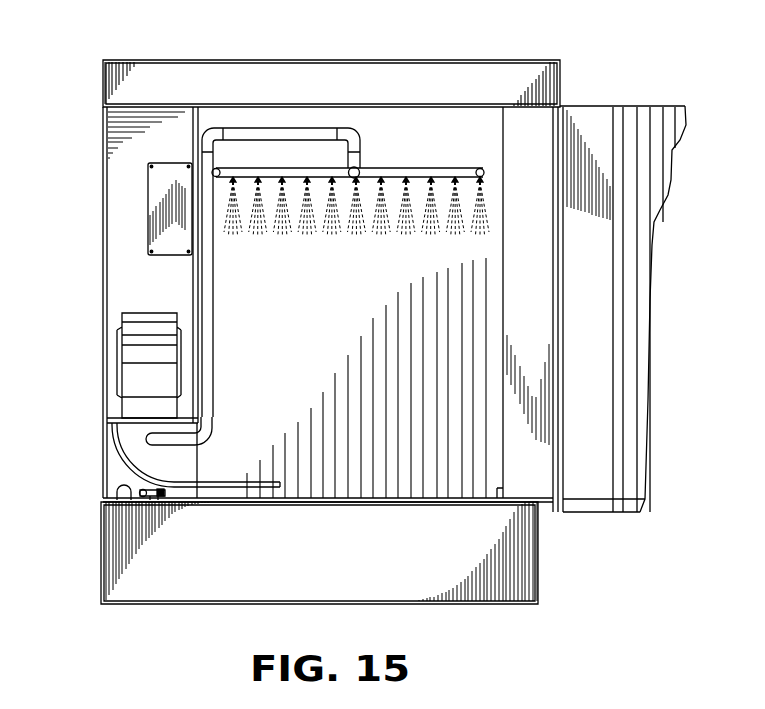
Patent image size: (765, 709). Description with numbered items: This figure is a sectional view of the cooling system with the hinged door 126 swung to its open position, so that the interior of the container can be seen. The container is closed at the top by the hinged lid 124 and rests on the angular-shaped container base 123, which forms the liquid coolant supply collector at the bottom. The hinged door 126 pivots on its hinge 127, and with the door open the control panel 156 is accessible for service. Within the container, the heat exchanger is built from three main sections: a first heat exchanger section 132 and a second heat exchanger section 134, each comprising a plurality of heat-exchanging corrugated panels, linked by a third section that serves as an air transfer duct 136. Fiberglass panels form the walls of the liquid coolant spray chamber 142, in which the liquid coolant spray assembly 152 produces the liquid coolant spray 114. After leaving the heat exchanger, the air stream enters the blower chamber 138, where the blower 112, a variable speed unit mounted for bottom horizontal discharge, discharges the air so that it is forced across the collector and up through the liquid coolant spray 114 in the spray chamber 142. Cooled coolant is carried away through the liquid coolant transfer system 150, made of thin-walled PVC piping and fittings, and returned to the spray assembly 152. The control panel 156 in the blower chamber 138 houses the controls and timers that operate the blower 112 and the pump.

The blower 112 is at (142, 383).
The liquid coolant spray 114 is at (438, 200).
The container base 123 is at (101, 553).
The hinged lid 124 is at (560, 78).
The hinged door 126 is at (600, 527).
The hinge 127 is at (563, 347).
The first heat exchanger section 132 is at (630, 235).
The second heat exchanger section 134 is at (450, 397).
The air transfer duct 136 is at (530, 290).
The blower chamber 138 is at (170, 296).
The liquid coolant spray chamber 142 is at (362, 291).
The liquid coolant transfer system 150 is at (201, 145).
The liquid coolant spray assembly 152 is at (385, 168).
The control panel 156 is at (170, 233).